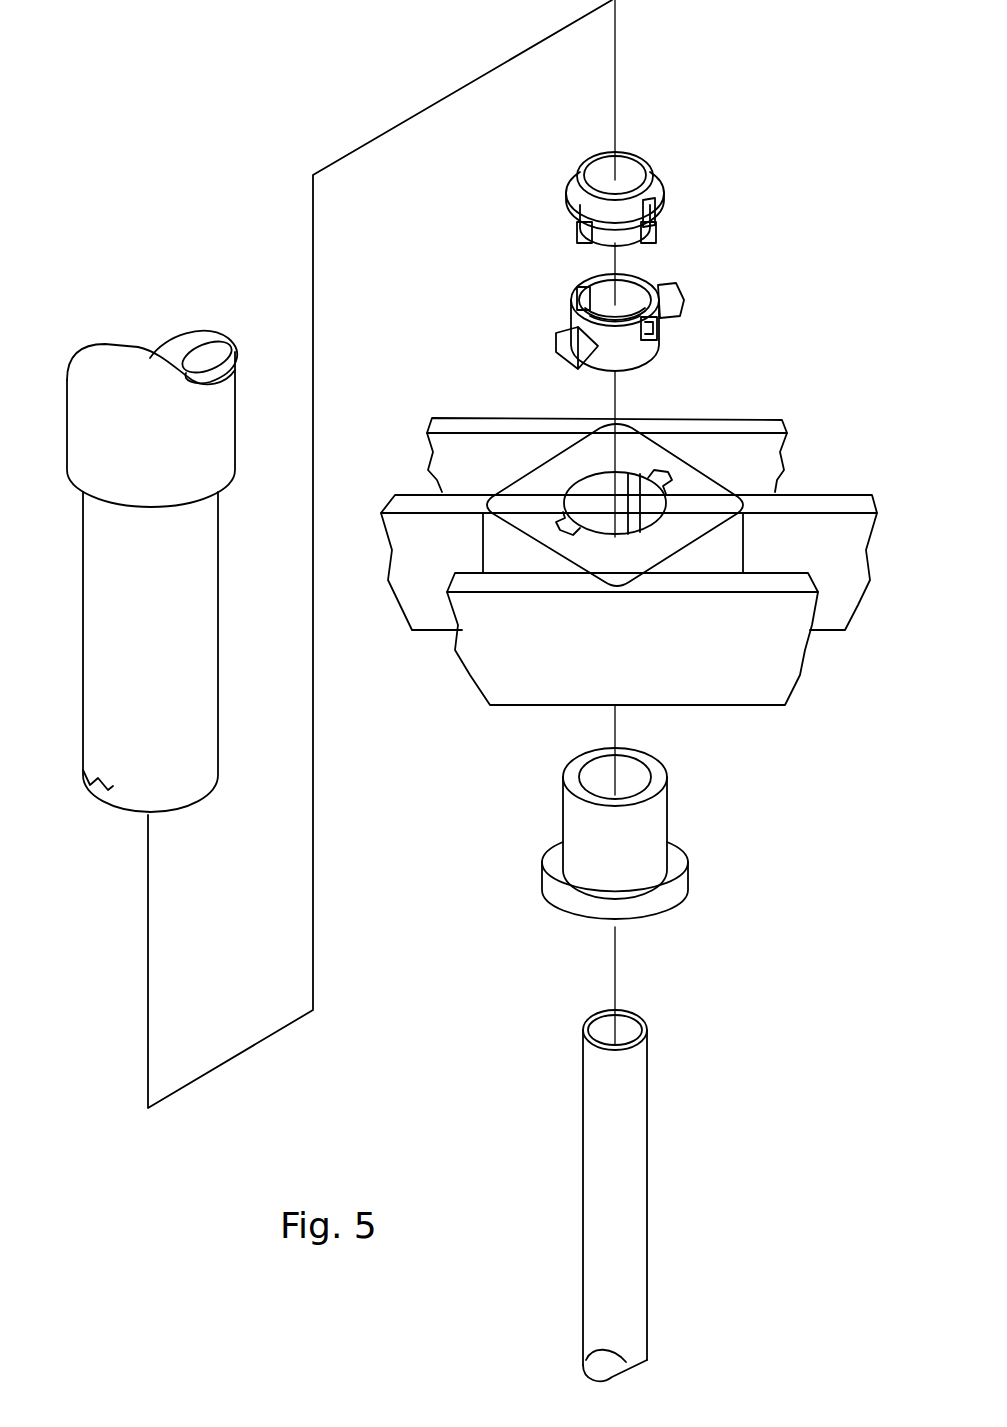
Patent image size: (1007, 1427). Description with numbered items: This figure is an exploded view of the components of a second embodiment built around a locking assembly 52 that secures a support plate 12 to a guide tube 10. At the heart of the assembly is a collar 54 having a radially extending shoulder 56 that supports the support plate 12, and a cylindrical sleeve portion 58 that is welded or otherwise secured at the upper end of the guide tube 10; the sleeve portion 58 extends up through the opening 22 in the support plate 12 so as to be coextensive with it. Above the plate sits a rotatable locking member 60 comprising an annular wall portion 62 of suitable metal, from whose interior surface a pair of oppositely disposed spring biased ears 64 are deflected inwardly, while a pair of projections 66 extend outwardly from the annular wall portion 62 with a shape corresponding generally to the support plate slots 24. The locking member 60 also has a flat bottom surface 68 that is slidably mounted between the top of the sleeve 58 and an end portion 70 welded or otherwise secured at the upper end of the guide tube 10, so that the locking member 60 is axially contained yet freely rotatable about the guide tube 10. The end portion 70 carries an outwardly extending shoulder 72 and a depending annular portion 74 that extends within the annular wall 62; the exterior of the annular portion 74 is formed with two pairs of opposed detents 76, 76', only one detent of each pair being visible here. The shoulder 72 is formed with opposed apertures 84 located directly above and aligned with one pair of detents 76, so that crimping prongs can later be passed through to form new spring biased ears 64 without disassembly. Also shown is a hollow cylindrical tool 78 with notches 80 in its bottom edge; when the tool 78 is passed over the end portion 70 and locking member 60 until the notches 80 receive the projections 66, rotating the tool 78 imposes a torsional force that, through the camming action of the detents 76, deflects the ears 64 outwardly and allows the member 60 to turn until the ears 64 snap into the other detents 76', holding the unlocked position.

The guide tube 10 is at (597, 1181).
The support plate 12 is at (745, 688).
The opening 22 is at (585, 495).
The support plate slots 24 is at (657, 483).
The locking assembly 52 is at (708, 265).
The collar 54 is at (612, 836).
The radially extending shoulder 56 is at (672, 893).
The cylindrical sleeve portion 58 is at (580, 757).
The rotatable locking member 60 is at (619, 327).
The annular wall portion 62 is at (620, 360).
The spring biased ears 64 is at (582, 286).
The projections 66 is at (682, 296).
The flat bottom surface 68 is at (630, 278).
The end portion 70 is at (631, 165).
The outwardly extending shoulder 72 is at (658, 178).
The depending annular portion 74 is at (648, 234).
The detents 76 is at (545, 226).
The detents 76' is at (695, 211).
The hollow cylindrical tool 78 is at (198, 614).
The notches 80 is at (110, 788).
The apertures 84 is at (578, 160).